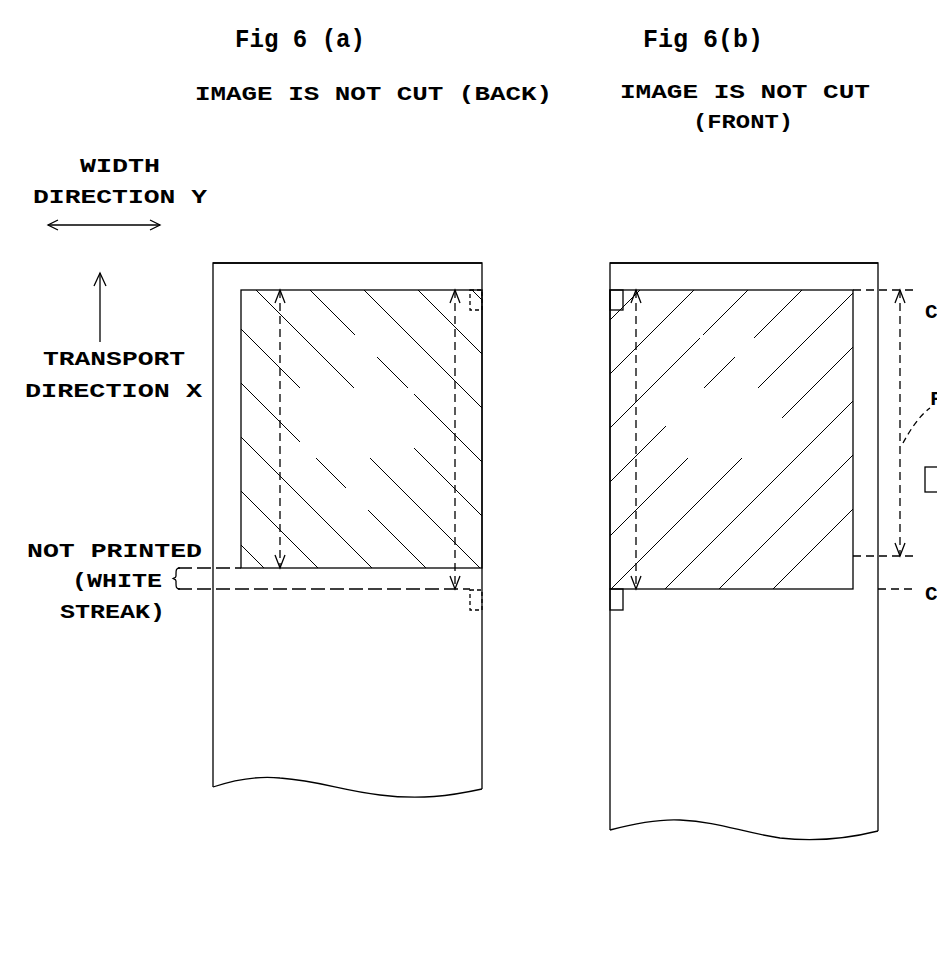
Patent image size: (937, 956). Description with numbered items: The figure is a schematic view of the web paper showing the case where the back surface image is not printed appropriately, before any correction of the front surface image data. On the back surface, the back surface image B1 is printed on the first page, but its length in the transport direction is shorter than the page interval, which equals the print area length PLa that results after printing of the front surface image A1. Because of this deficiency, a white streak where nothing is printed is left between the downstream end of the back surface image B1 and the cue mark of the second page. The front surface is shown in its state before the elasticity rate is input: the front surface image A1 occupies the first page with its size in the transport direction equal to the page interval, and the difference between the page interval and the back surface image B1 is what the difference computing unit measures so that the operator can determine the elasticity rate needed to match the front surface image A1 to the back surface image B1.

The print area length PLa is at (280, 520).
The back surface image B1 is at (375, 429).
The front surface image A1 is at (639, 439).